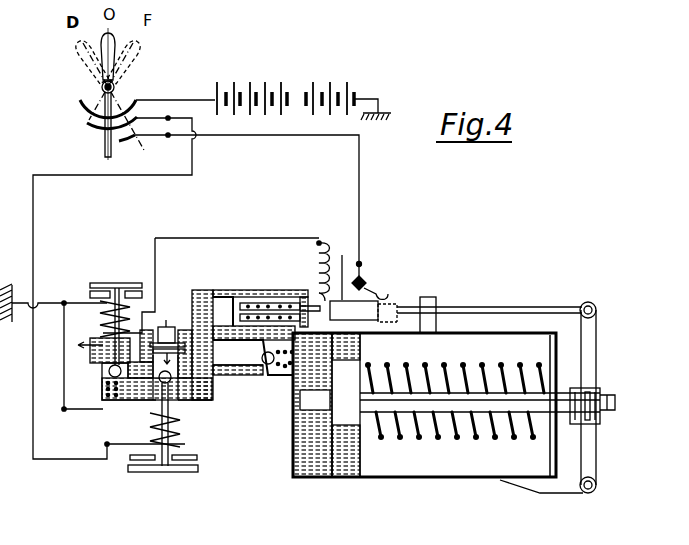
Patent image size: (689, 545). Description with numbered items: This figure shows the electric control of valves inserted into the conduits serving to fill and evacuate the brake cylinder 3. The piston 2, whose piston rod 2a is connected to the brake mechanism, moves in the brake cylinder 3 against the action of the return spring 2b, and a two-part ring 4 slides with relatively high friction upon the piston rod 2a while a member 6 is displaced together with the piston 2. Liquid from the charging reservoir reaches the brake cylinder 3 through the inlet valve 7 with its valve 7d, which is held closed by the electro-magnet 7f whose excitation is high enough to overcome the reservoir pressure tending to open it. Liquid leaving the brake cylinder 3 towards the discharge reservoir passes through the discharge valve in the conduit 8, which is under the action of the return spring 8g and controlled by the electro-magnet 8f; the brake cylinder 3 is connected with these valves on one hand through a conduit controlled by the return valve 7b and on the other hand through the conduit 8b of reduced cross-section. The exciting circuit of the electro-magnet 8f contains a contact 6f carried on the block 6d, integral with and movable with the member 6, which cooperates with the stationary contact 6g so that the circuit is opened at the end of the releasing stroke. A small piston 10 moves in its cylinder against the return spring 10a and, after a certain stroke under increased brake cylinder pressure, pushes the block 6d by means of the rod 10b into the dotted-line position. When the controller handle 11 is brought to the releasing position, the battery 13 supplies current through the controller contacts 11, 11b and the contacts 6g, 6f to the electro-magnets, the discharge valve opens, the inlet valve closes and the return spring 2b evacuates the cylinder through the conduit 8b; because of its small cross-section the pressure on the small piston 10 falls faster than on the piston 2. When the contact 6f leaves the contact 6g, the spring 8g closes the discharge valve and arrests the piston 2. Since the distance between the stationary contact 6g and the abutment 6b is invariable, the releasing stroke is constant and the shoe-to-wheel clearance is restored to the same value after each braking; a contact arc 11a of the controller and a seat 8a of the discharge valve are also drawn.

The controller handle 11 is at (113, 43).
The contact arc 11a is at (136, 100).
The controller contact 11b is at (147, 147).
The battery 13 is at (252, 84).
The contact 6f is at (341, 267).
The block 6d is at (347, 312).
The stationary contact 6g is at (384, 293).
The abutment 6b is at (436, 301).
The member 6 is at (541, 307).
The ring 4 is at (580, 390).
The small piston 10 is at (247, 290).
The rod 10b is at (270, 300).
The return spring 10a is at (268, 298).
The conduit of reduced cross-section 8b is at (250, 334).
The return valve 7b is at (277, 376).
The electro-magnet 8f is at (101, 313).
The conduit 8 is at (102, 356).
The ball 8a is at (107, 377).
The return spring 8g is at (112, 400).
The inlet valve 7 is at (169, 360).
The valve 7d is at (170, 385).
The electro-magnet 7f is at (183, 438).
The piston 2 is at (337, 418).
The piston rod 2a is at (428, 405).
The return spring 2b is at (458, 440).
The brake cylinder 3 is at (317, 477).